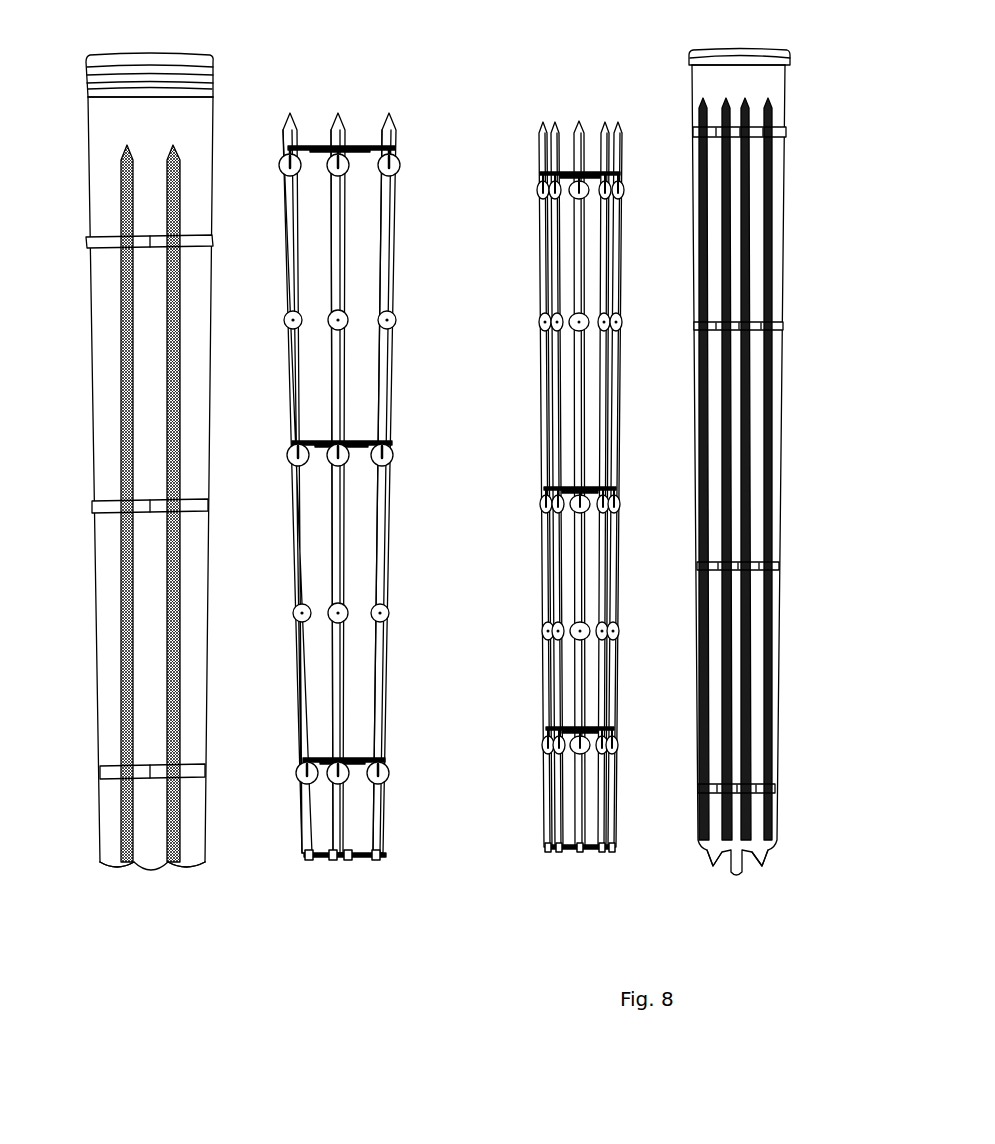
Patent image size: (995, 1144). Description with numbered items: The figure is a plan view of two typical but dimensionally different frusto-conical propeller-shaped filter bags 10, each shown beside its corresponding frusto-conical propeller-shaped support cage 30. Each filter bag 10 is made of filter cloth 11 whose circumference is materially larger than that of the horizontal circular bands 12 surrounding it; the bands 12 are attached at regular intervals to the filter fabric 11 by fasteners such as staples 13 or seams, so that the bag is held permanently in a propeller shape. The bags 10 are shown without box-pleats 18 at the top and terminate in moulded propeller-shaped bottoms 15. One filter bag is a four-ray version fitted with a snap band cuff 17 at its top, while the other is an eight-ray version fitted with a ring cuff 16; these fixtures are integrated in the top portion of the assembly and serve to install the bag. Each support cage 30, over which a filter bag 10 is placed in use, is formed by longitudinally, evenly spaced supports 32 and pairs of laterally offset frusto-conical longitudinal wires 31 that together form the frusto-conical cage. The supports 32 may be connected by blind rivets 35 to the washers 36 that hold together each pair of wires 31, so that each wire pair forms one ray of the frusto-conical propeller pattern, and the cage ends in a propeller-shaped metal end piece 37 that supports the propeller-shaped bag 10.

The filter bag 10 is at (75, 310).
The filter cloth 11 is at (105, 573).
The circular band 12 is at (103, 238).
The staples 13 is at (122, 768).
The moulded propeller-shaped bottom 15 is at (110, 865).
The ring cuff 16 is at (715, 53).
The snap band cuff 17 is at (200, 72).
The box-pleats 18 is at (118, 128).
The support cage 30 is at (408, 356).
The longitudinal wires 31 is at (300, 512).
The supports 32 is at (365, 148).
The blind rivets 35 is at (366, 860).
The washers 36 is at (292, 616).
The propeller-shaped metal end piece 37 is at (310, 858).